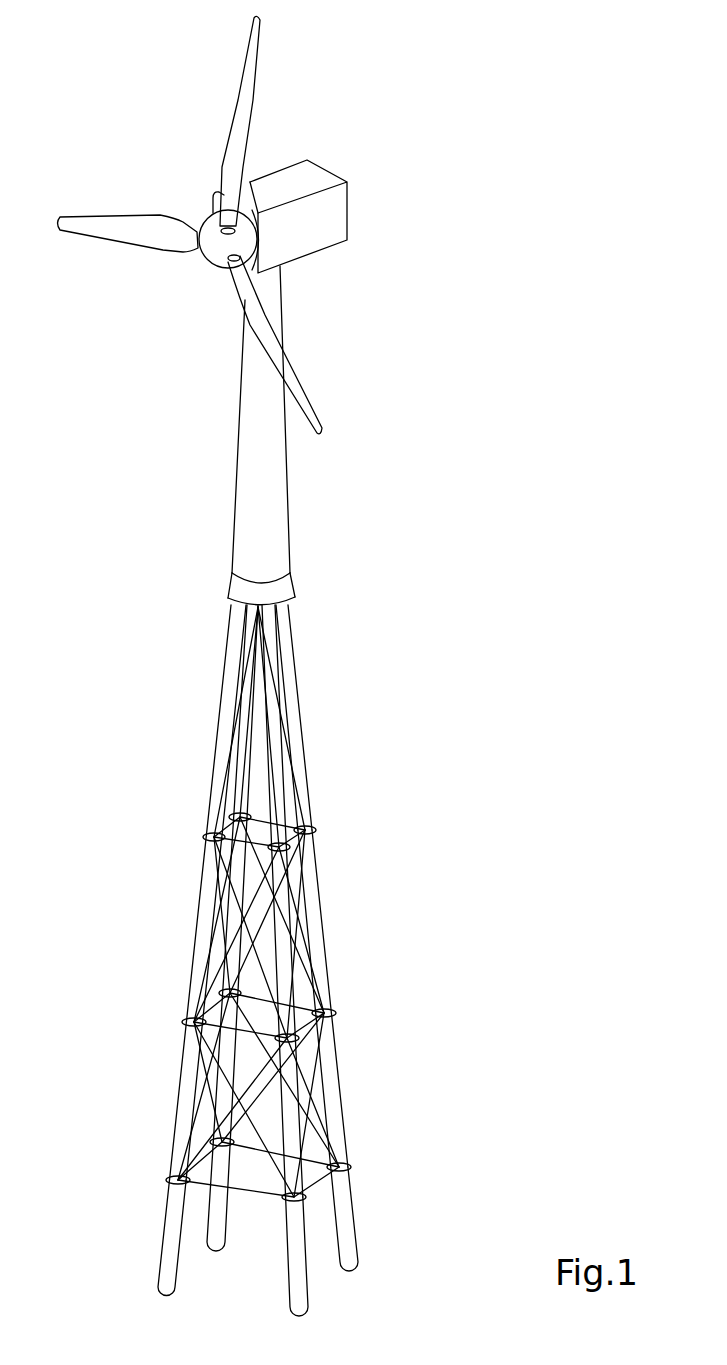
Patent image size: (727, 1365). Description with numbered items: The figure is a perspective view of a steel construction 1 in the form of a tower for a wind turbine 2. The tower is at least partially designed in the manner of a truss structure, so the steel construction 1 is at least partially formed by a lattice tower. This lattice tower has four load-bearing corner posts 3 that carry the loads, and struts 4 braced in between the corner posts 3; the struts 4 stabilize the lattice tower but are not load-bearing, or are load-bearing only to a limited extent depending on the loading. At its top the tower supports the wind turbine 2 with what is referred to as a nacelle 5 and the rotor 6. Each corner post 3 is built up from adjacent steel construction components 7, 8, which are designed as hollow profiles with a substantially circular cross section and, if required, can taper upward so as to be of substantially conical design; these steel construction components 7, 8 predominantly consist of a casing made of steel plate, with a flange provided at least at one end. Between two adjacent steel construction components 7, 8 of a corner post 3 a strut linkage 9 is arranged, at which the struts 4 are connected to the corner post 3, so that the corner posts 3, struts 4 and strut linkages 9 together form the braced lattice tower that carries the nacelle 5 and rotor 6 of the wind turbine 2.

The steel construction 1 is at (363, 777).
The wind turbine 2 is at (457, 473).
The load-bearing corner posts 3 is at (213, 1222).
The struts 4 is at (182, 978).
The nacelle 5 is at (315, 177).
The rotor 6 is at (212, 256).
The steel construction component 7 is at (333, 1107).
The steel construction component 8 is at (315, 942).
The strut linkage 9 is at (332, 1012).